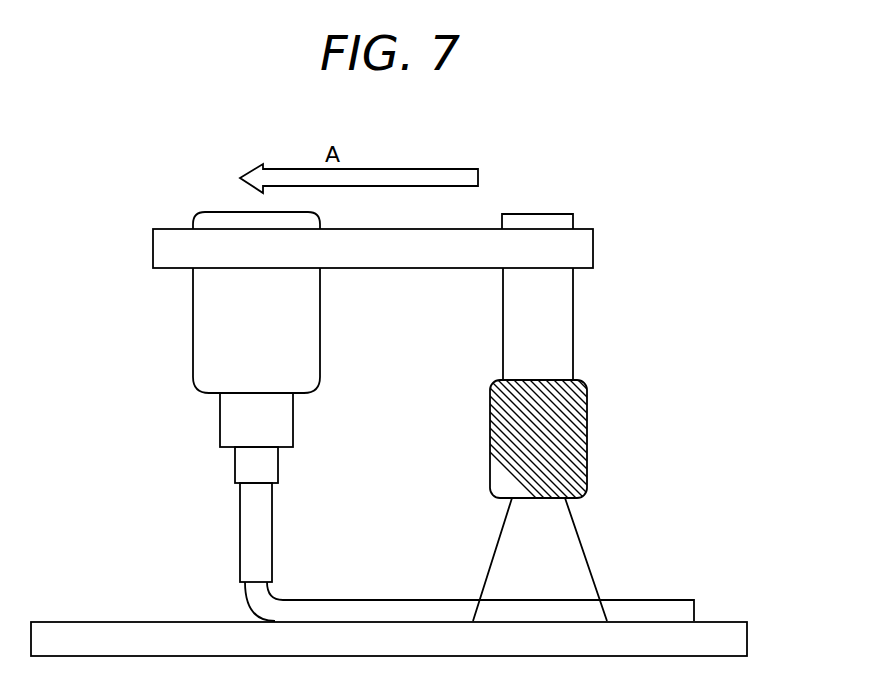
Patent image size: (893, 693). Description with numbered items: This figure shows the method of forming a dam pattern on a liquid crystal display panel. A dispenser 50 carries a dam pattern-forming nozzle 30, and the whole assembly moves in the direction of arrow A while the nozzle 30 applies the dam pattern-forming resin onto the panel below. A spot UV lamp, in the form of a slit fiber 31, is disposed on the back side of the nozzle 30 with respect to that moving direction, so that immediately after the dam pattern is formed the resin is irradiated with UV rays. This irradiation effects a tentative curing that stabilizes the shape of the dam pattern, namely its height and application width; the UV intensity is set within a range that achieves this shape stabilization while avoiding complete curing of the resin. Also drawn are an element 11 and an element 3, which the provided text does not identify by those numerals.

The dispenser 50 is at (193, 321).
The nozzle 30 is at (240, 527).
The spot UV lamp (slit fiber) 31 is at (587, 413).
The bead of applied material 11 is at (655, 599).
The substrate 3 is at (730, 621).